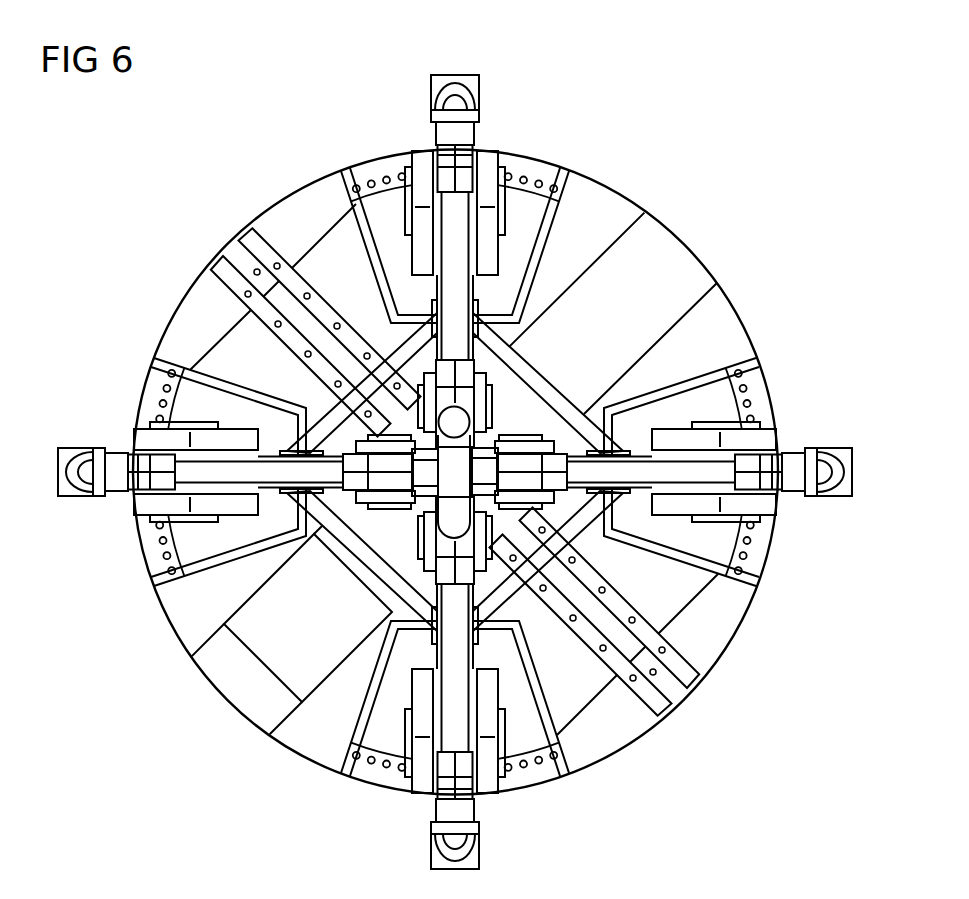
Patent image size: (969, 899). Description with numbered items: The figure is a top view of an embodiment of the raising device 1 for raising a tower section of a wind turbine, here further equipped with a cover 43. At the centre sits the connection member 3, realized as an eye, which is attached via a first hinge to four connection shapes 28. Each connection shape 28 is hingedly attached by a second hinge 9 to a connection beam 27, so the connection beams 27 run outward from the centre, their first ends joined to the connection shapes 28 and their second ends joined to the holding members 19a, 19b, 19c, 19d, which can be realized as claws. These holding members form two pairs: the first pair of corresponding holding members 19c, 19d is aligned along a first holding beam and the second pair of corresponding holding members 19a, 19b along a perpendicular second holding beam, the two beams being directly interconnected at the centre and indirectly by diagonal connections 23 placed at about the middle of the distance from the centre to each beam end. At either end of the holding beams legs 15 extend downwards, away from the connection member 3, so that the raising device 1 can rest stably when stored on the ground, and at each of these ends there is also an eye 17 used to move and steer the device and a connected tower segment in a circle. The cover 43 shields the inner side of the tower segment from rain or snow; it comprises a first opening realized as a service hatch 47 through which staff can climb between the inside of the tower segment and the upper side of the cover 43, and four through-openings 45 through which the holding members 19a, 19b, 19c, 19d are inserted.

The raising device 1 is at (648, 143).
The connection member 3 is at (478, 572).
The second hinge 9 is at (387, 432).
The leg 15 is at (492, 78).
The eye 17 is at (435, 108).
The holding member 19a is at (237, 438).
The holding member 19b is at (673, 505).
The holding member 19c is at (488, 255).
The holding member 19d is at (422, 688).
The diagonal connection 23 is at (578, 522).
The connection beam 27 is at (456, 288).
The connection shape 28 is at (492, 468).
The cover 43 is at (677, 258).
The through-opening 45 is at (727, 400).
The service hatch 47 is at (278, 662).